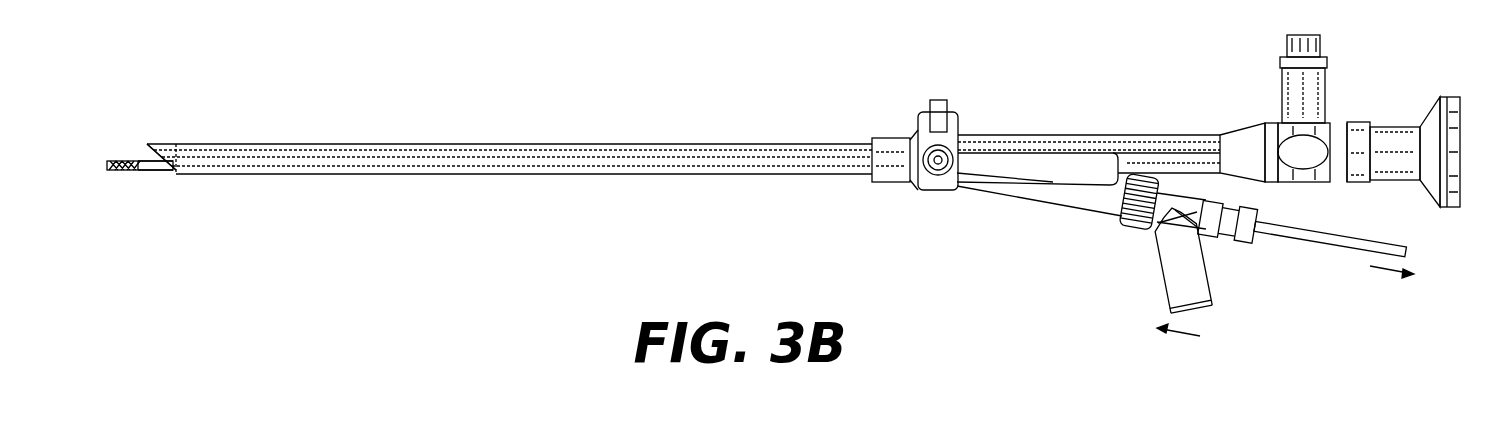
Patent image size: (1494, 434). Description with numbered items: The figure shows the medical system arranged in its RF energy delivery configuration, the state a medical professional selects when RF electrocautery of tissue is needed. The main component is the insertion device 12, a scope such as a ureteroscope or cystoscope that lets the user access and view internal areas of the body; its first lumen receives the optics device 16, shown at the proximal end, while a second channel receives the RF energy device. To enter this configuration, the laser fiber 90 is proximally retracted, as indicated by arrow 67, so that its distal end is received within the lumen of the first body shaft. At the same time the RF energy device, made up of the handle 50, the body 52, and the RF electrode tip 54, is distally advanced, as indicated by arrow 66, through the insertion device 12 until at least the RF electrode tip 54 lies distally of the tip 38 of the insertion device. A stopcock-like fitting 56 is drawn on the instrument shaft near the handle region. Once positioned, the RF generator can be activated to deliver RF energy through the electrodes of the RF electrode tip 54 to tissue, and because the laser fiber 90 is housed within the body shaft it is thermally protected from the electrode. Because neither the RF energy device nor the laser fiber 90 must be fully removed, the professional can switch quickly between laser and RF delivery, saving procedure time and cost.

The insertion device 12 is at (617, 176).
The optics device 16 is at (1392, 123).
The tip 38 is at (173, 143).
The handle 50 is at (1172, 210).
The body 52 is at (153, 174).
The RF electrode tip 54 is at (113, 172).
The stopcock valve 56 is at (1244, 240).
The arrow 66 is at (1200, 336).
The arrow 67 is at (1383, 268).
The laser fiber 90 is at (1313, 237).